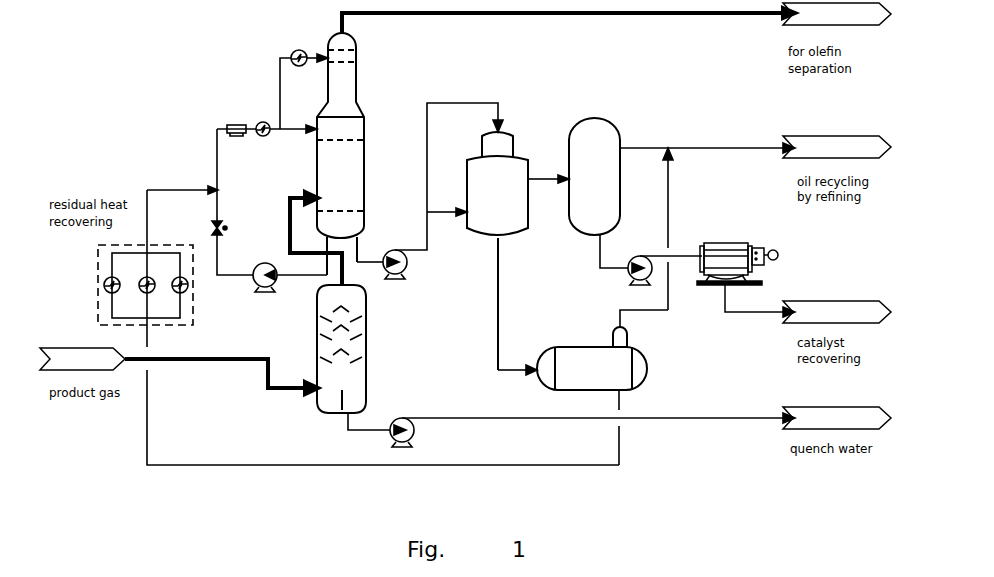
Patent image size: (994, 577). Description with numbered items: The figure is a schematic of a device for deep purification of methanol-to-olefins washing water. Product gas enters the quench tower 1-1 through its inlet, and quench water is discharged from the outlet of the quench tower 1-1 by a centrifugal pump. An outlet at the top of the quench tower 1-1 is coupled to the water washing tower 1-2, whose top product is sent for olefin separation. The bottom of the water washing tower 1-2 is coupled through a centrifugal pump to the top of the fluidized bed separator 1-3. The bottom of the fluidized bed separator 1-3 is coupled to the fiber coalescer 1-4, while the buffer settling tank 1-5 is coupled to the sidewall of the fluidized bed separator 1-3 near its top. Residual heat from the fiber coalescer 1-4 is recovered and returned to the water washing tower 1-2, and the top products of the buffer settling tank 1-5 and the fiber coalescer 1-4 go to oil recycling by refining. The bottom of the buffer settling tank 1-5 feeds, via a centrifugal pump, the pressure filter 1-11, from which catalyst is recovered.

The quench tower 1-1 is at (326, 380).
The water washing tower 1-2 is at (327, 190).
The fluidized bed separator 1-3 is at (480, 175).
The fiber coalescer 1-4 is at (628, 378).
The buffer settling tank 1-5 is at (603, 150).
The pressure filter 1-11 is at (745, 276).